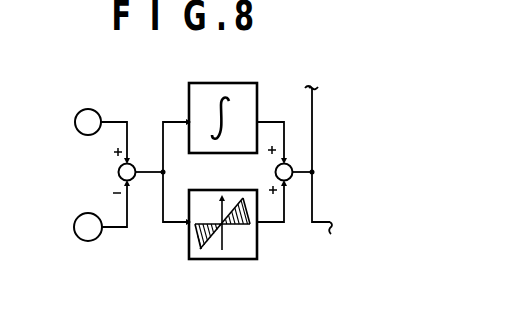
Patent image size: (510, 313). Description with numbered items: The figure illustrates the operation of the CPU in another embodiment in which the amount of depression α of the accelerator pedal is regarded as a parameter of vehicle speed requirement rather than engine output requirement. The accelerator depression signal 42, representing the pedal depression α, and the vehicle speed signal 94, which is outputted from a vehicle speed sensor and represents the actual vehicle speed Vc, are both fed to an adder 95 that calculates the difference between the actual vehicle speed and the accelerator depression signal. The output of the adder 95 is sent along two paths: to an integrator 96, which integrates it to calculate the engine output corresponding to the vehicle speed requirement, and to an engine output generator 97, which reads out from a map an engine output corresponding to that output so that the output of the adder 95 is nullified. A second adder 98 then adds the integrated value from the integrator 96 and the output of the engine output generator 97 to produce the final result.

The accelerator depression signal 42 is at (86, 108).
The vehicle speed signal 94 is at (78, 238).
The adder 95 is at (118, 172).
The integrator 96 is at (252, 84).
The engine output generator 97 is at (188, 235).
The adder 98 is at (275, 170).